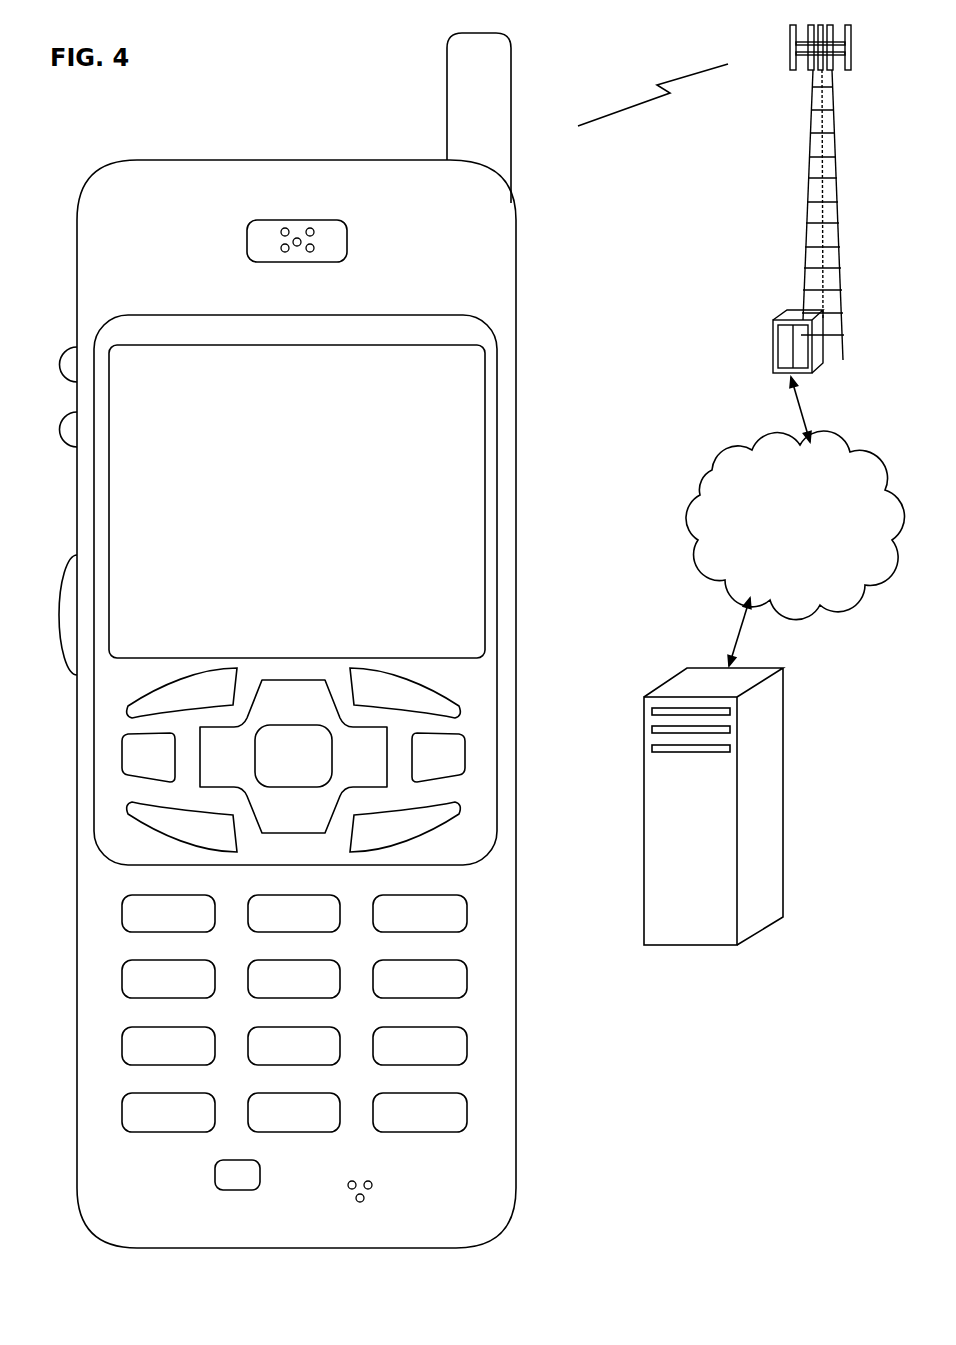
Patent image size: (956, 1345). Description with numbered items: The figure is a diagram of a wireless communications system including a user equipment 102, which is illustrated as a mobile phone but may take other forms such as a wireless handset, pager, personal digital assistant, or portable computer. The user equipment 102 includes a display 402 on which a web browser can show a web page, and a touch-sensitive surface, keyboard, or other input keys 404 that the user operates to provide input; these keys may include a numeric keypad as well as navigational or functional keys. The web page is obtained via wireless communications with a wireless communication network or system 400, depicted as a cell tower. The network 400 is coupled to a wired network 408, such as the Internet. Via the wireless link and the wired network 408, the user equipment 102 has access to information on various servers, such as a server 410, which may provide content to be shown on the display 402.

The user equipment 102 is at (328, 655).
The wireless communication network or system 400 is at (808, 214).
The display 402 is at (512, 352).
The input keys 404 is at (526, 668).
The wired network 408 is at (712, 578).
The server 410 is at (693, 945).